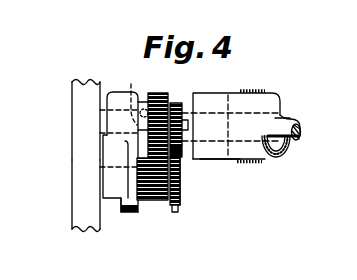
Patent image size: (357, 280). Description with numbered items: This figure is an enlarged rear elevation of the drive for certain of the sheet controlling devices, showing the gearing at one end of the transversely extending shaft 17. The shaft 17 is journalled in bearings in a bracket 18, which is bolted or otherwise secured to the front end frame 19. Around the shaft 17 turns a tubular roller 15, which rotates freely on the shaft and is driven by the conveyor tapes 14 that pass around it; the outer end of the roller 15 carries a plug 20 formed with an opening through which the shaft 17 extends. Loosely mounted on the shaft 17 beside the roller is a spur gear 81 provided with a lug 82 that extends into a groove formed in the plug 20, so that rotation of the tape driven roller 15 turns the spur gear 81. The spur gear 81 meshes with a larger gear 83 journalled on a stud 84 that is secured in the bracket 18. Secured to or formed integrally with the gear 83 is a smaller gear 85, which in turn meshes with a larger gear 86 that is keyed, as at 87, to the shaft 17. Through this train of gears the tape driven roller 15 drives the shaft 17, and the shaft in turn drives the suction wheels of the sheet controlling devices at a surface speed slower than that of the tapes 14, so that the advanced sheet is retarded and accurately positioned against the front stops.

The conveyor tapes 14 is at (250, 89).
The tubular roller 15 is at (217, 163).
The shaft 17 is at (284, 121).
The bracket 18 is at (110, 105).
The front end frame 19 is at (78, 177).
The plug 20 is at (190, 149).
The spur gear 81 is at (176, 103).
The lug 82 is at (190, 122).
The larger gear 83 is at (178, 212).
The stud 84 is at (183, 182).
The smaller gear 85 is at (140, 205).
The larger gear 86 is at (157, 93).
The key 87 is at (133, 86).